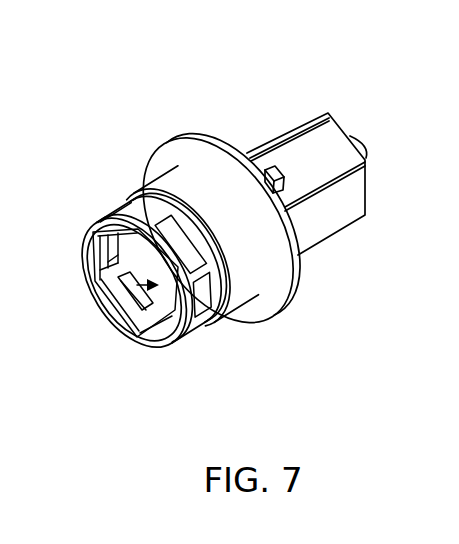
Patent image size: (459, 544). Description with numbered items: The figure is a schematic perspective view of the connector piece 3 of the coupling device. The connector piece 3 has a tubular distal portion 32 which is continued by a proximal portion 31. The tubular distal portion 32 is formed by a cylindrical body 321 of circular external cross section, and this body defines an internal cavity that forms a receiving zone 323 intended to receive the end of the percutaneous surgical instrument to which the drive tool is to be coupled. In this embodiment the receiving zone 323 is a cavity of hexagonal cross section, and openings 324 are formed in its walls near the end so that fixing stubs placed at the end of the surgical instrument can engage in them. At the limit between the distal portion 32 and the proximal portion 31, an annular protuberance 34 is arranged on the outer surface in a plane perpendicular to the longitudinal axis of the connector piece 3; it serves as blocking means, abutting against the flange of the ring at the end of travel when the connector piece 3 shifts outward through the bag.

The connector piece 3 is at (265, 112).
The proximal portion 31 is at (343, 217).
The tubular distal portion 32 is at (139, 254).
The cylindrical body 321 is at (173, 175).
The receiving zone 323 is at (175, 253).
The openings 324 is at (204, 308).
The annular protuberance 34 is at (293, 281).